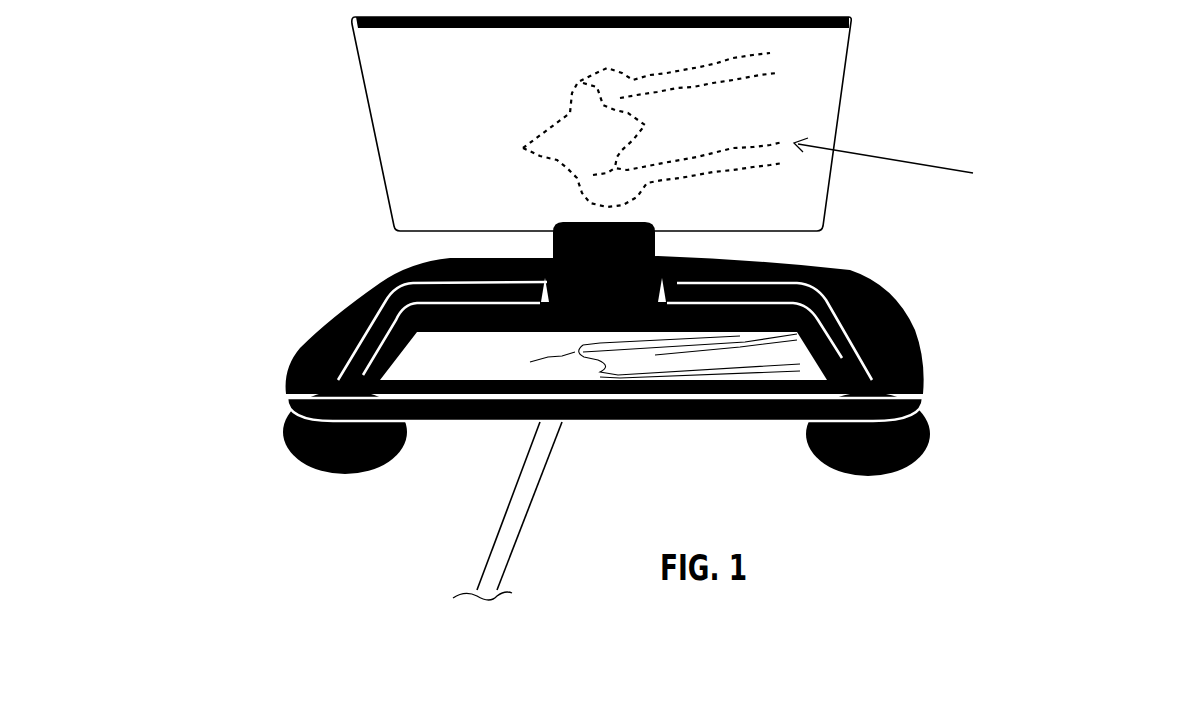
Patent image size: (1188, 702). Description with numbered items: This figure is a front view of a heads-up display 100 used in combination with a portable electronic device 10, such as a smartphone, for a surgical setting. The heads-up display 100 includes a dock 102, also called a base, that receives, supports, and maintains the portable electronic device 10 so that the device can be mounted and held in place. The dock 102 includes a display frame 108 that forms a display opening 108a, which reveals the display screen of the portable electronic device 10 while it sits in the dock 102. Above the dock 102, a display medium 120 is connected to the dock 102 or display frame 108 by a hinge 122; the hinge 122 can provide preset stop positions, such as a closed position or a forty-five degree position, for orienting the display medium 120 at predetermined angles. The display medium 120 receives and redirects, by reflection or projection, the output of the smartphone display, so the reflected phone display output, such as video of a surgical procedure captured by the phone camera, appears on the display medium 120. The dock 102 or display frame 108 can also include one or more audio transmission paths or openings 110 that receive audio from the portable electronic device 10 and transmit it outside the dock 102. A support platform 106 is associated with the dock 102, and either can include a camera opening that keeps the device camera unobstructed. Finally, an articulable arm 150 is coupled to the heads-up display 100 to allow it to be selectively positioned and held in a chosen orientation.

The heads-up display 100 is at (208, 121).
The display medium 120 is at (840, 60).
The hinge 122 is at (685, 247).
The audio transmission openings 110 is at (278, 343).
The dock 102 is at (840, 268).
The display frame 108 is at (855, 305).
The display opening 108a is at (433, 290).
The portable electronic device 10 is at (718, 421).
The support platform 106 is at (370, 457).
The articulable arm 150 is at (480, 528).